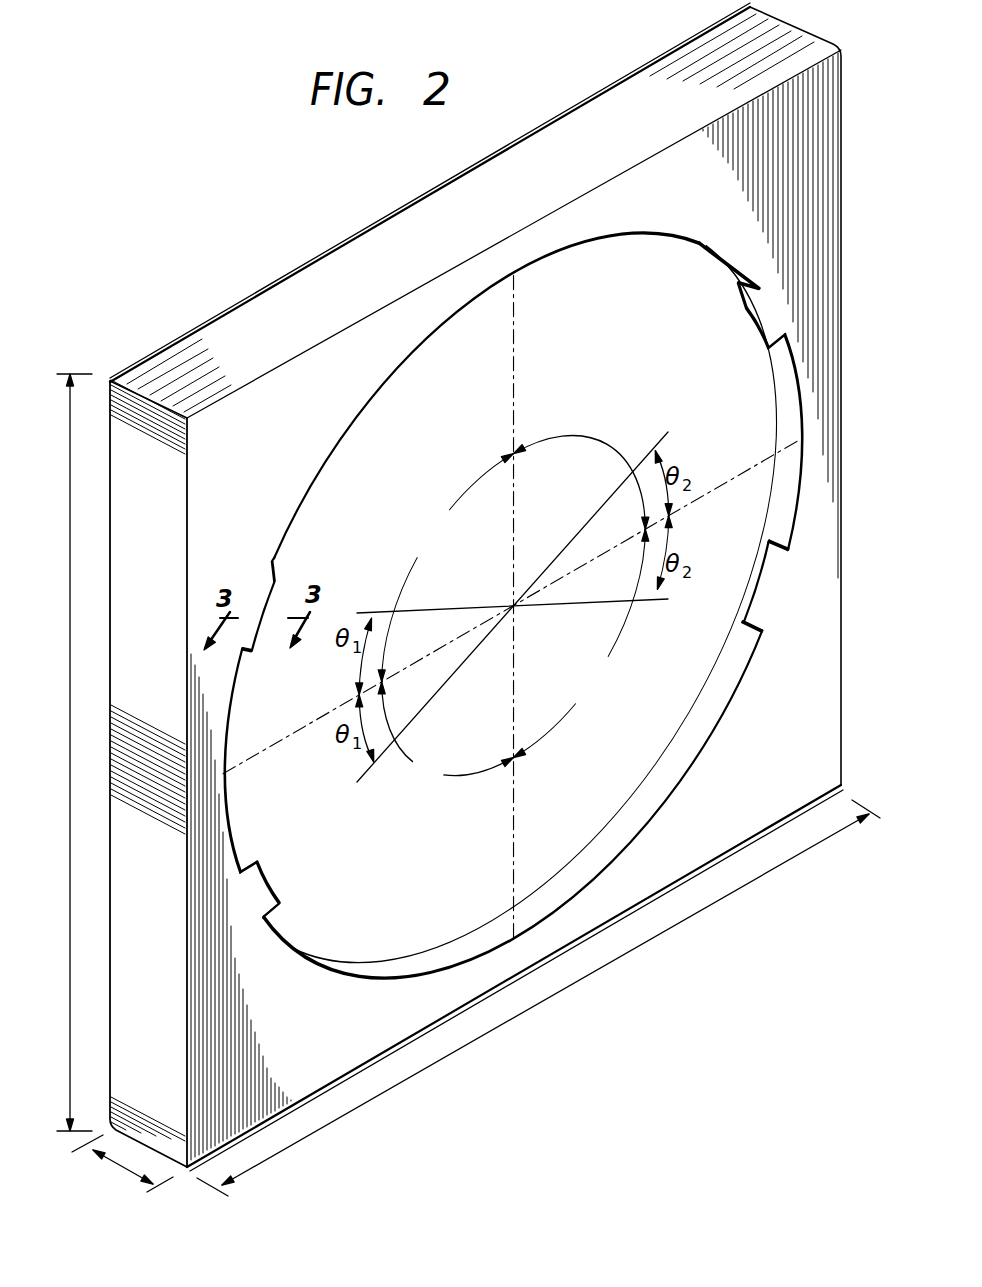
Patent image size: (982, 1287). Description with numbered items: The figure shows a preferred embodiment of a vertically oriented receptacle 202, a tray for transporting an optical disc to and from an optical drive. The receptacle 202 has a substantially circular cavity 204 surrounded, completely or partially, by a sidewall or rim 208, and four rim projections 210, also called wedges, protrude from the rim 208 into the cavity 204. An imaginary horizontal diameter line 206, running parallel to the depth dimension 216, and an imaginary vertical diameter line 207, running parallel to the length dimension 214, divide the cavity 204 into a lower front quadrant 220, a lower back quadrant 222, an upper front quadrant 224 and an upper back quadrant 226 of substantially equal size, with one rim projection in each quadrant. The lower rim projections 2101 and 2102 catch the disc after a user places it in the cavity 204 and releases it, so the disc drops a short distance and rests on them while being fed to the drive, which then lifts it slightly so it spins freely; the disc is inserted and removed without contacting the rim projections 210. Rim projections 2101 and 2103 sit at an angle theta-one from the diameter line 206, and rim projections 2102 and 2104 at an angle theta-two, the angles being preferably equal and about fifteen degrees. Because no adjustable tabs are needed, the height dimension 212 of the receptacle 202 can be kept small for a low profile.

The receptacle 202 is at (288, 206).
The cavity 204 is at (423, 468).
The horizontal diameter line 206 is at (751, 470).
The vertical diameter line 207 is at (514, 372).
The rim 208 is at (749, 580).
The rim projections 210 is at (535, 561).
The first rim projection 2101 is at (258, 856).
The second rim projection 2102 is at (755, 645).
The third rim projection 2103 is at (258, 640).
The fourth rim projection 2104 is at (766, 352).
The height dimension 212 is at (120, 1166).
The length dimension 214 is at (76, 752).
The depth dimension 216 is at (538, 998).
The lower front quadrant 220 is at (456, 771).
The lower back quadrant 222 is at (581, 643).
The upper front quadrant 224 is at (445, 568).
The upper back quadrant 226 is at (553, 443).